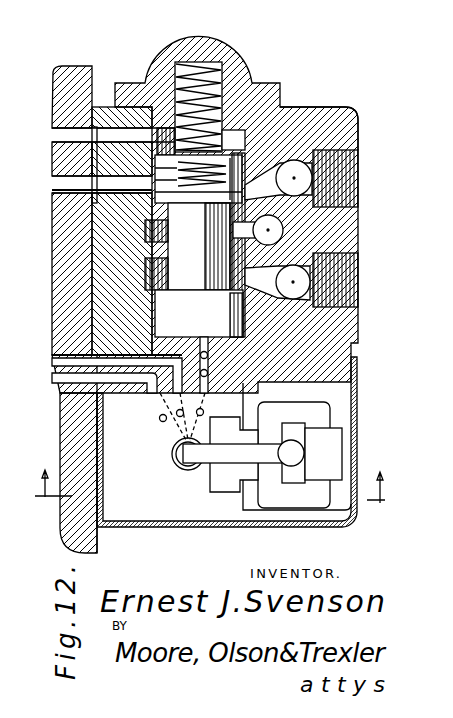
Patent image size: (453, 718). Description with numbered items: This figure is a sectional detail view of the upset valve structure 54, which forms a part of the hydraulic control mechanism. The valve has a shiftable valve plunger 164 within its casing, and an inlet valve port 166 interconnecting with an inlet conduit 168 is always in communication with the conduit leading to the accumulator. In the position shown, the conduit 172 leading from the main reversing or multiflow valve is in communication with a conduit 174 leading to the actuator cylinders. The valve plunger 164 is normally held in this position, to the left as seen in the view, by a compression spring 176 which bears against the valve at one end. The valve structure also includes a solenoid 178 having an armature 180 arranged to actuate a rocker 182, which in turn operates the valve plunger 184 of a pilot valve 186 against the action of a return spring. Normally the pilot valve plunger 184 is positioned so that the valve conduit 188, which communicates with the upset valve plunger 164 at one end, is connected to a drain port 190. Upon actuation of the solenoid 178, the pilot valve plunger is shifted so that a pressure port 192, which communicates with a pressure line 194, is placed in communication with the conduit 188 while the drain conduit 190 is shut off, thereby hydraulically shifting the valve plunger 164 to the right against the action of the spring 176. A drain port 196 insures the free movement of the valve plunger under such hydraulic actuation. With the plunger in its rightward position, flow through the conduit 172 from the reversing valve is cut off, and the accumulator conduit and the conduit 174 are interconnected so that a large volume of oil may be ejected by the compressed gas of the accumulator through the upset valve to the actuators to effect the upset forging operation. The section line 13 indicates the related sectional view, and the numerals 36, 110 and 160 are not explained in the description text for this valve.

The section line 13- 13 is at (210, 498).
The cylinder block 36 is at (62, 107).
The upset valve structure 54 is at (340, 110).
The threaded port 110 is at (296, 180).
The flange member 160 is at (74, 186).
The valve plunger 164 is at (195, 245).
The inlet valve port 166 is at (122, 208).
The inlet conduit 168 is at (290, 112).
The conduit 172 is at (352, 300).
The conduit 174 is at (270, 230).
The compression spring 176 is at (168, 70).
The solenoid 178 is at (340, 518).
The armature 180 is at (304, 455).
The rocker 182 is at (222, 463).
The valve plunger 184 is at (176, 464).
The pilot valve 186 is at (140, 440).
The valve conduit 188 is at (170, 338).
The drain port 190 is at (118, 384).
The pressure port 192 is at (115, 350).
The pressure line 194 is at (82, 350).
The drain port 196 is at (110, 127).